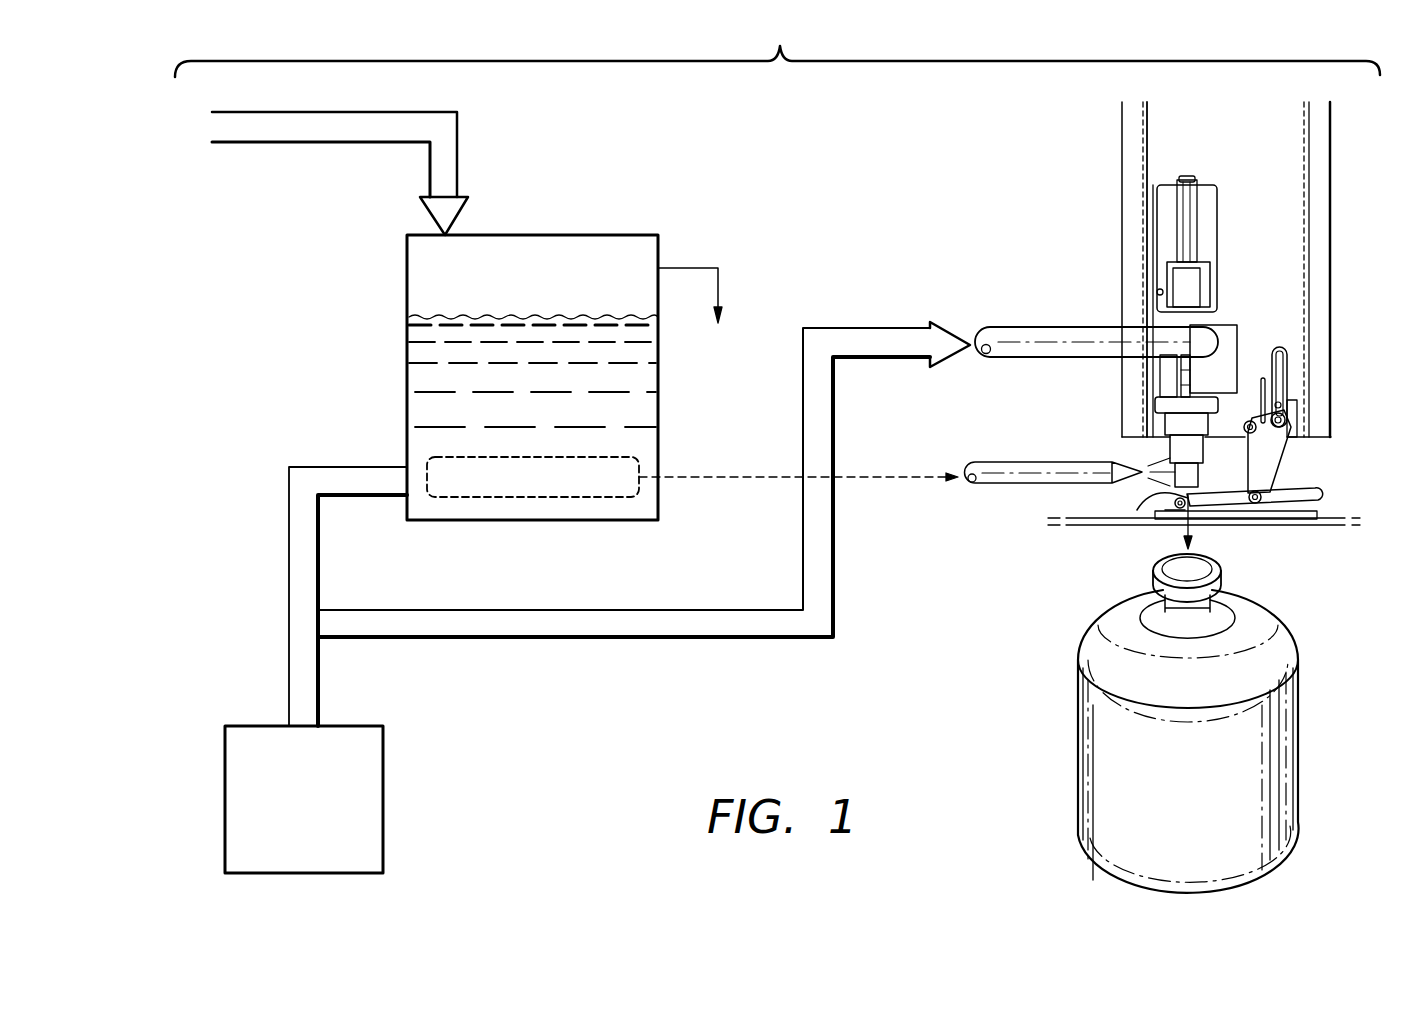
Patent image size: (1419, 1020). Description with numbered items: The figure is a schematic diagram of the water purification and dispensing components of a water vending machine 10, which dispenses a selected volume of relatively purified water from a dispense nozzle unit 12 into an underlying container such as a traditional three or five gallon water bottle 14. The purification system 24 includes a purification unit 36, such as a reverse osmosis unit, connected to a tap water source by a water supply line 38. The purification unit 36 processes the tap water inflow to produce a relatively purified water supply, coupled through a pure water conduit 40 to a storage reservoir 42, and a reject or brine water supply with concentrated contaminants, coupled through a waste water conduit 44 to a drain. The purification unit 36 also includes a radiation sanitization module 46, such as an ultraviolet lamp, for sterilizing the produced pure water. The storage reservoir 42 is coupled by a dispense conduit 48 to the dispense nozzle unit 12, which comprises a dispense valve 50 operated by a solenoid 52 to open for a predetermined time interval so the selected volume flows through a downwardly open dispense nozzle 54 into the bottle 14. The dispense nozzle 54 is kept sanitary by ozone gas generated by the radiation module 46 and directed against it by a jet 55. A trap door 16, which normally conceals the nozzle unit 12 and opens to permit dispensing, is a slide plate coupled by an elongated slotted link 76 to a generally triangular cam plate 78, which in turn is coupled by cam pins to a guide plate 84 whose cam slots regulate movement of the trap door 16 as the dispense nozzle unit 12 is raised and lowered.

The water vending machine 10 is at (456, 826).
The dispense nozzle unit 12 is at (1245, 201).
The water bottle 14 is at (1292, 762).
The trap door 16 is at (1137, 500).
The purification system 24 is at (300, 343).
The purification unit 36 is at (598, 233).
The water supply line 38 is at (455, 152).
The pure water conduit 40 is at (287, 540).
The storage reservoir 42 is at (225, 800).
The waste water conduit 44 is at (687, 268).
The radiation sanitization module 46 is at (533, 497).
The dispense conduit 48 is at (738, 640).
The dispense valve 50 is at (1234, 320).
The solenoid 52 is at (1182, 282).
The dispense nozzle 54 is at (1176, 452).
The jet 55 is at (993, 468).
The slotted link 76 is at (1297, 490).
The cam plate 78 is at (1272, 452).
The guide plate 84 is at (1237, 373).